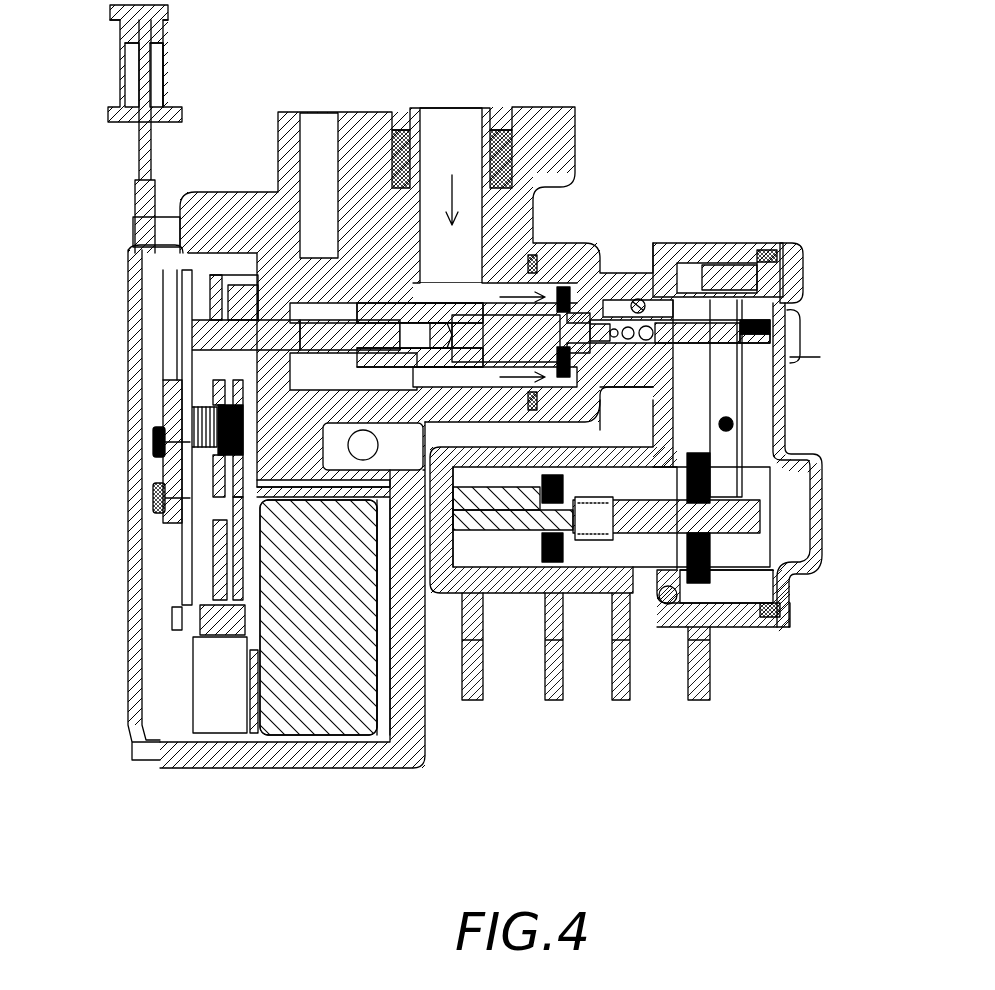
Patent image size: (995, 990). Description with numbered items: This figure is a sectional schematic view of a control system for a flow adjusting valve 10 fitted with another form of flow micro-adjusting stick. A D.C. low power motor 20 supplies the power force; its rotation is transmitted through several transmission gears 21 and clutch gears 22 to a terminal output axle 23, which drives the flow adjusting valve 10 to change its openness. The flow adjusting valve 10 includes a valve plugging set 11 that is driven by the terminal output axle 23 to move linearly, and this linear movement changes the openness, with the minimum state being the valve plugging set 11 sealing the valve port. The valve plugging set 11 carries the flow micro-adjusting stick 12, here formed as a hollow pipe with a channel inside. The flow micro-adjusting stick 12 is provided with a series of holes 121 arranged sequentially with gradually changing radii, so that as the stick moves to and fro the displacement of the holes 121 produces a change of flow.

The flow adjusting valve 10 is at (573, 110).
The valve plugging set 11 is at (520, 312).
The flow micro-adjusting stick 12 is at (683, 250).
The holes 121 is at (640, 299).
The D.C. low power motor 20 is at (412, 763).
The transmission gears 21 is at (195, 562).
The clutch gears 22 is at (215, 460).
The terminal output axle 23 is at (187, 340).